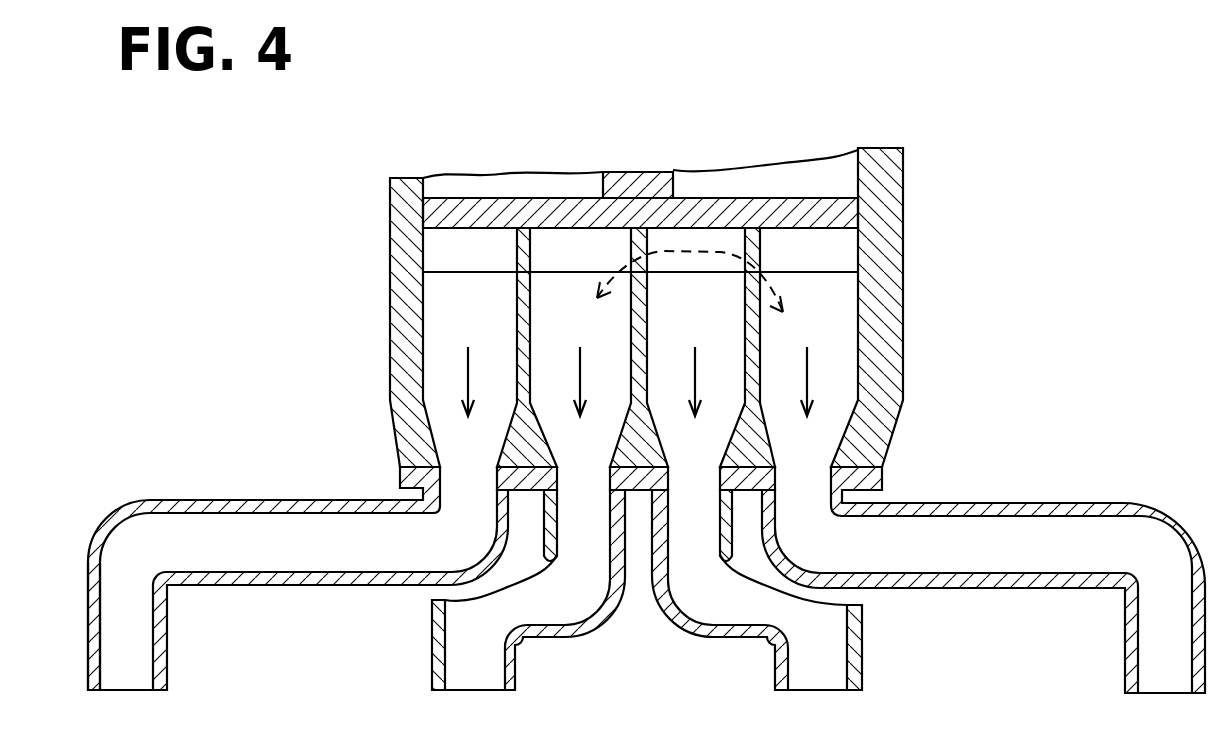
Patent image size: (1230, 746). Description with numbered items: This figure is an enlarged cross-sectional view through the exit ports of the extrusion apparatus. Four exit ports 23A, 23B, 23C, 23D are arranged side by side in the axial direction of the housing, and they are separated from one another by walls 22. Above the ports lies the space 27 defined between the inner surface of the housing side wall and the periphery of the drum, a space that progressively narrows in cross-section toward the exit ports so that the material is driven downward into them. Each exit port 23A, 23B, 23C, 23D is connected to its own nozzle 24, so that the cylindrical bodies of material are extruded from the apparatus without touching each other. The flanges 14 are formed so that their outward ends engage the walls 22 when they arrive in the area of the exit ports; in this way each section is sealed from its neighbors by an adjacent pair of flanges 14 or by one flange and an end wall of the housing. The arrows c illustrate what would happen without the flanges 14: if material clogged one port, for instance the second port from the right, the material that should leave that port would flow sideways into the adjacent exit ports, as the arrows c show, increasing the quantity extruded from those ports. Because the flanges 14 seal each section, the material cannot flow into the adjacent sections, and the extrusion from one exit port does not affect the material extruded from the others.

The flange 14 is at (744, 228).
The space 27 is at (470, 248).
The wall 22 is at (513, 312).
The exit port 23A is at (458, 322).
The exit port 23B is at (557, 335).
The exit port 23C is at (713, 340).
The exit port 23D is at (803, 427).
The nozzle 24 is at (88, 580).
The arrow c is at (690, 298).